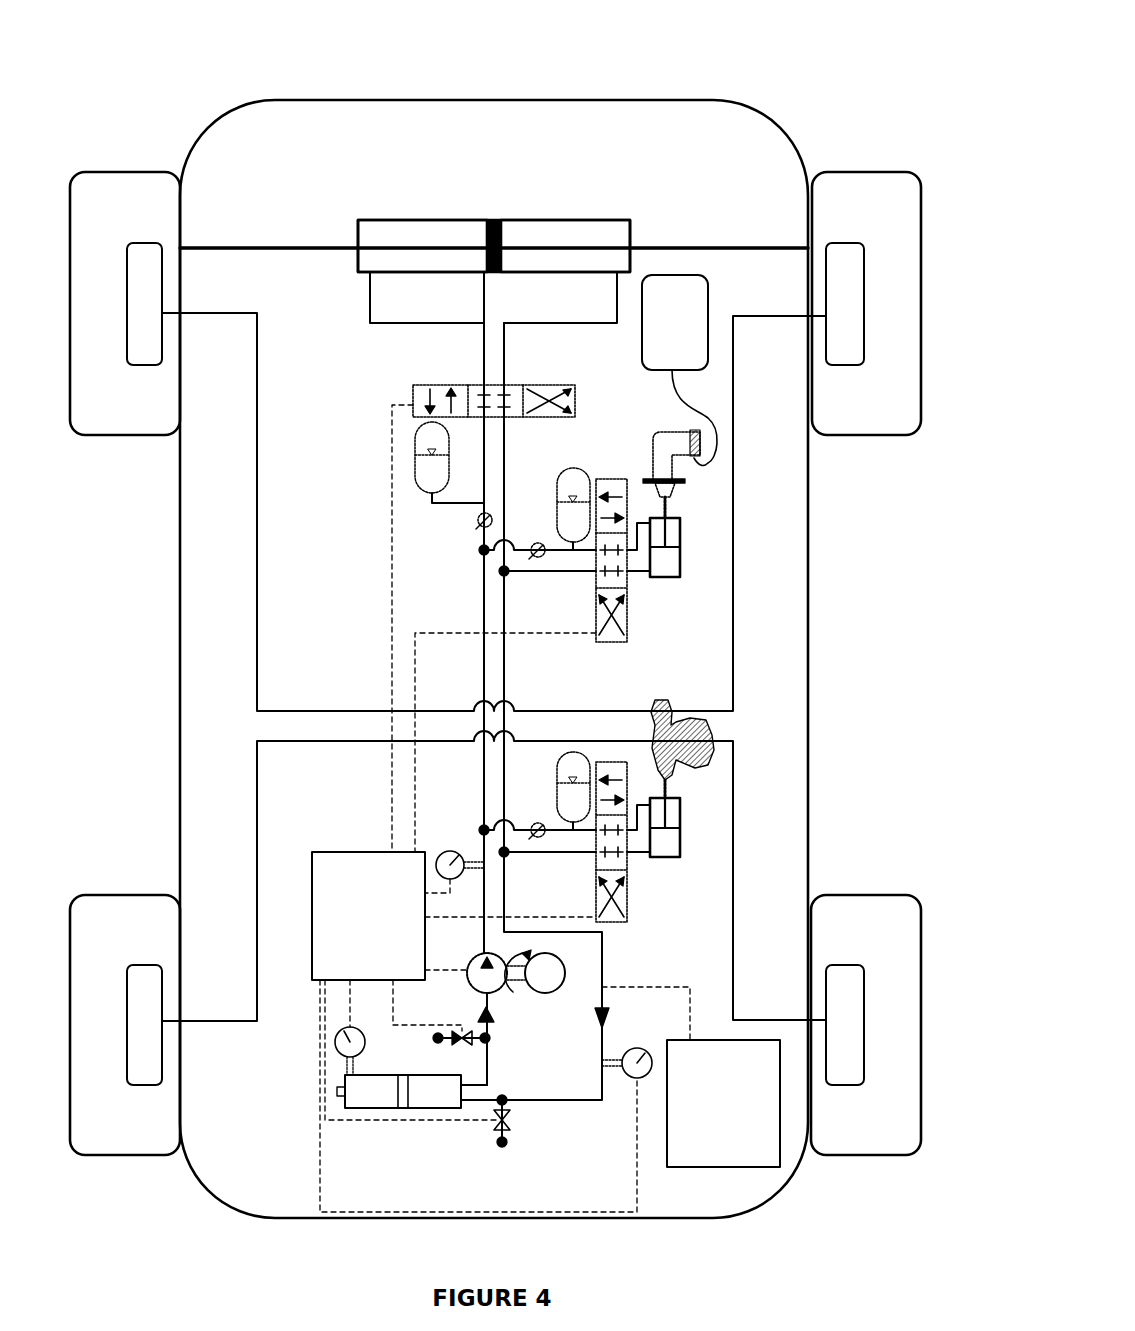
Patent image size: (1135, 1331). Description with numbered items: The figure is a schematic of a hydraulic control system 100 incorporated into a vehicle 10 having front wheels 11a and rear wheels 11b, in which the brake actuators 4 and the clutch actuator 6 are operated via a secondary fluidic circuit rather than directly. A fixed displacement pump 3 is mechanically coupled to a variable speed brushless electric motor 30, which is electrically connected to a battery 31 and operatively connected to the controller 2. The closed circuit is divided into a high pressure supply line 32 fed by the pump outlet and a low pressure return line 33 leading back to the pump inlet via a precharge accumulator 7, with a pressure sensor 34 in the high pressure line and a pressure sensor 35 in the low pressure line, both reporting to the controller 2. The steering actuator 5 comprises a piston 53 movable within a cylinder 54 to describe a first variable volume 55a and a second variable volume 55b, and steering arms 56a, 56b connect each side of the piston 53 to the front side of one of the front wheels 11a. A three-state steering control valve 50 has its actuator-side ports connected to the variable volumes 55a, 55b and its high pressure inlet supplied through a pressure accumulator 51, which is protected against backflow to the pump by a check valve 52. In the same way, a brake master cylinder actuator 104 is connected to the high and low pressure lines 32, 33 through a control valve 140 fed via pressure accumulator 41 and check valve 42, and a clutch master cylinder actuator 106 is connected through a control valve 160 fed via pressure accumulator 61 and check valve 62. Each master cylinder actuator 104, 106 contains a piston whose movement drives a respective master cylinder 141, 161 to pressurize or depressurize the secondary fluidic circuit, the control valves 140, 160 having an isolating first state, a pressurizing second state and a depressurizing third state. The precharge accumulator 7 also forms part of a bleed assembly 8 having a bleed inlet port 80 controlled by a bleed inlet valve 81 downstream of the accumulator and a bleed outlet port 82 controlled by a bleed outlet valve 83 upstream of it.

The hydraulic control system 100 is at (803, 67).
The vehicle 10 is at (523, 100).
The steering actuator 5 is at (644, 168).
The front wheels 11a is at (120, 172).
The rear wheels 11b is at (97, 894).
The brake actuators 4 is at (127, 298).
The steering arm 56a is at (282, 245).
The steering arm 56b is at (727, 246).
The cylinder 54 is at (631, 226).
The first variable volume 55a is at (410, 220).
The second variable volume 55b is at (588, 220).
The piston 53 is at (497, 220).
The steering control valve 50 is at (422, 385).
The high pressure supply line 32 is at (483, 620).
The pressure accumulator 51 is at (422, 478).
The check valve 52 is at (480, 517).
The check valve 62 is at (540, 550).
The pressure accumulator 61 is at (557, 488).
The control valve 160 is at (628, 613).
The clutch master cylinder actuator 106 is at (681, 560).
The master cylinder 161 is at (658, 450).
The clutch actuator 6 is at (675, 322).
The check valve 42 is at (534, 826).
The pressure accumulator 41 is at (583, 752).
The control valve 140 is at (628, 878).
The brake master cylinder actuator 104 is at (683, 843).
The master cylinder 141 is at (670, 704).
The pressure sensor 34 is at (448, 851).
The controller 2 is at (368, 916).
The fixed displacement pump 3 is at (502, 983).
The electric motor 30 is at (545, 978).
The low pressure return line 33 is at (603, 958).
The pressure sensor 35 is at (626, 1050).
The battery 31 is at (723, 1103).
The bleed assembly 8 is at (330, 1170).
The precharge accumulator 7 is at (385, 1108).
The bleed inlet port 80 is at (438, 1043).
The bleed inlet valve 81 is at (500, 1030).
The bleed outlet port 82 is at (508, 1142).
The bleed outlet valve 83 is at (512, 1120).